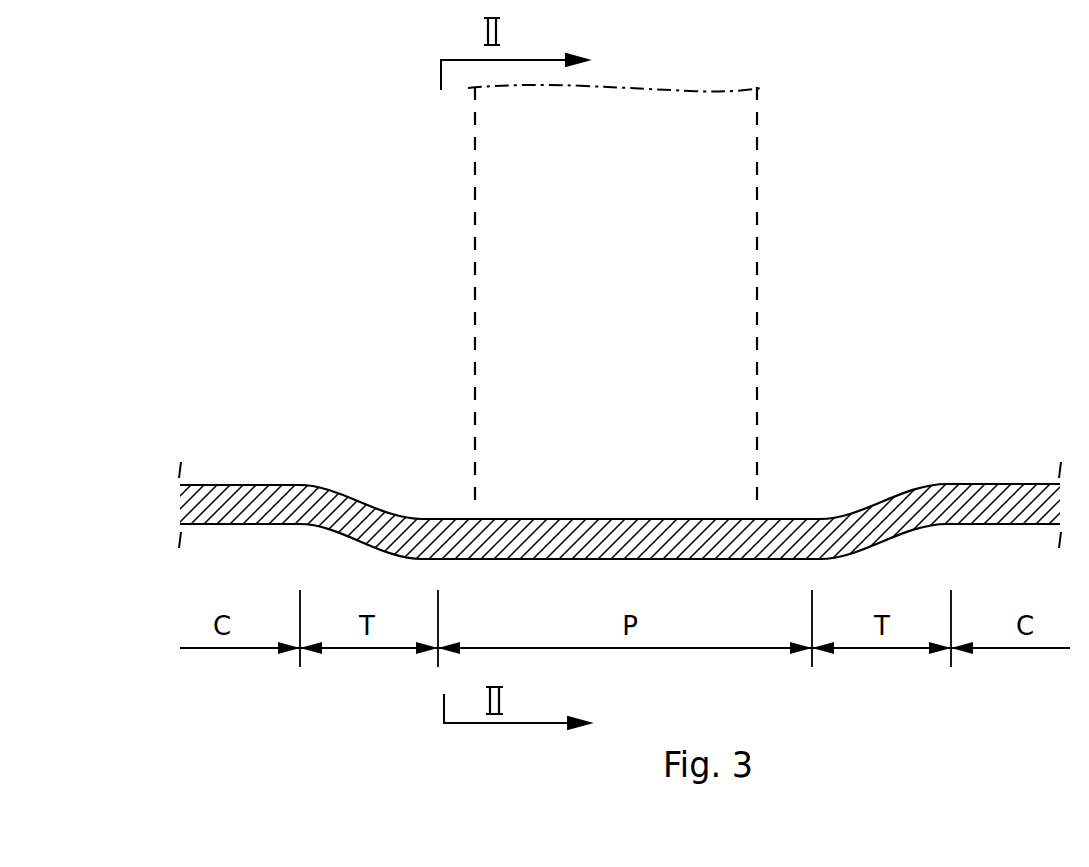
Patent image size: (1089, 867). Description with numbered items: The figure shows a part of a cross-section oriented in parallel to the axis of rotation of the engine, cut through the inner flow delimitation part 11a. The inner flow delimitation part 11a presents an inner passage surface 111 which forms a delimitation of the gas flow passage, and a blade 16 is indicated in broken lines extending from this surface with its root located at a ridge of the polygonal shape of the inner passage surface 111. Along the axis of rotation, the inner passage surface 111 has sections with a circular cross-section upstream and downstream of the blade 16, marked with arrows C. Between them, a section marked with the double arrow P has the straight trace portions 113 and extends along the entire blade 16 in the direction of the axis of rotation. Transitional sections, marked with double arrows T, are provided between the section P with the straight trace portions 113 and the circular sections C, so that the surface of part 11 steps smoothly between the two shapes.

The plate 11 is at (574, 496).
The inner flow delimitation part 11a is at (574, 496).
The inner passage surface 111 is at (574, 496).
The straight trace portion 113 is at (618, 518).
The blade 16 is at (611, 304).